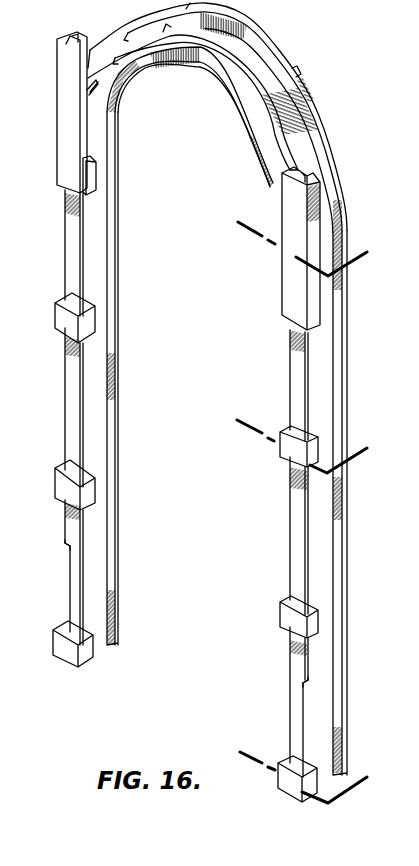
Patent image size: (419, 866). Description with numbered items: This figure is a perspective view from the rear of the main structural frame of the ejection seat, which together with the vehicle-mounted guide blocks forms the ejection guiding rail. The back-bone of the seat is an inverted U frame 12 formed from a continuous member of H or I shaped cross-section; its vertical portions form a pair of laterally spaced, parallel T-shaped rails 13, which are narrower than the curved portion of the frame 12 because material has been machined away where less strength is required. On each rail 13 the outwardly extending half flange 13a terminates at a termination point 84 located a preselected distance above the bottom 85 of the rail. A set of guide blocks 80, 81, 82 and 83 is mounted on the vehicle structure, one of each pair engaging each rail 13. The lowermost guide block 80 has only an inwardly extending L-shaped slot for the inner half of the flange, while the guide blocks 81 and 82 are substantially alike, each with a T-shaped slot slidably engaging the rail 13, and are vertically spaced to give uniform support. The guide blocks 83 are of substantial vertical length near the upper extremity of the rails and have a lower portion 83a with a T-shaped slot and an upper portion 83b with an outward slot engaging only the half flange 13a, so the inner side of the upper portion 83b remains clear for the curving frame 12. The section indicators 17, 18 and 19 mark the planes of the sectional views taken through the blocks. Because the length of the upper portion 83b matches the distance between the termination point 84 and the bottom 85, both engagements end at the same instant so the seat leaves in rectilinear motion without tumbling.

The inverted U frame 12 is at (264, 138).
The T-shaped rail 13 is at (73, 433).
The outwardly extending half flange 13a is at (65, 529).
The section line 17- 17 is at (357, 773).
The section line 18- 18 is at (360, 440).
The section line 19- 19 is at (363, 246).
The lowermost guide block 80 is at (66, 655).
The guide block 81 is at (74, 497).
The guide block 82 is at (74, 325).
The upper guide block 83 is at (72, 179).
The lower portion of guide block 83a is at (91, 174).
The upper portion of guide block 83b is at (84, 88).
The termination point 84 is at (69, 548).
The bottom of the rail 85 is at (98, 647).